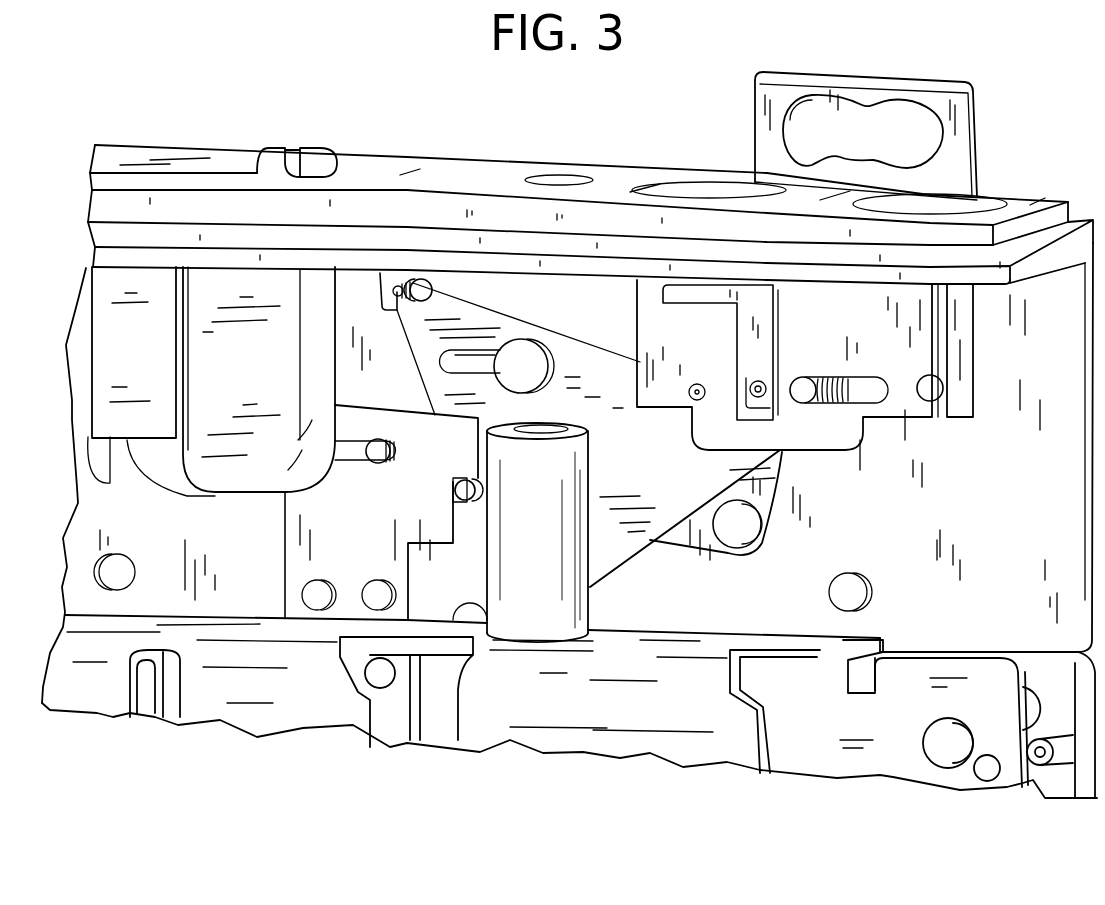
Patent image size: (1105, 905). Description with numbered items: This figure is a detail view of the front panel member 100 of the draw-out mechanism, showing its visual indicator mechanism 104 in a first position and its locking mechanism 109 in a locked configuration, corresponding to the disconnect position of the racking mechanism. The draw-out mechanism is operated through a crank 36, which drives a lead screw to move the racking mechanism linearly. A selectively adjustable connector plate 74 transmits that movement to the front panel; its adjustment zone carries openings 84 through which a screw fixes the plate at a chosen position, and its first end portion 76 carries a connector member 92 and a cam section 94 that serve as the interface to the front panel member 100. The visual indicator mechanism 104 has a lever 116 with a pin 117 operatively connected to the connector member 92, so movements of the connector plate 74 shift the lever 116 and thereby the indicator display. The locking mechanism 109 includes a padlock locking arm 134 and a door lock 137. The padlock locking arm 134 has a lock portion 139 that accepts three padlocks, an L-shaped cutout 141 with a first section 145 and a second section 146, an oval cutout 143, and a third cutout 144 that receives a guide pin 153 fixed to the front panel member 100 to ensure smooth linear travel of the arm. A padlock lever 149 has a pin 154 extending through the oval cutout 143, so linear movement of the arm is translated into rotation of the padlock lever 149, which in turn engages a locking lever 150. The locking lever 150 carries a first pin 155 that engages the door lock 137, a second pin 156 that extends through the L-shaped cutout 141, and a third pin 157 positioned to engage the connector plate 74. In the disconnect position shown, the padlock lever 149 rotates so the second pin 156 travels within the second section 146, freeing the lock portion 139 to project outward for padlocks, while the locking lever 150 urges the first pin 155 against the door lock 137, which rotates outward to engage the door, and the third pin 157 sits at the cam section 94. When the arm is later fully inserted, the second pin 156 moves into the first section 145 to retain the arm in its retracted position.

The front panel member 100 is at (176, 110).
The door lock 137 is at (383, 298).
The first pin 155 is at (413, 277).
The first section 145 is at (745, 271).
The lock portion 139 is at (884, 106).
The padlock locking arm 134 is at (903, 120).
The third cutout 144 is at (933, 317).
The second section 146 is at (767, 336).
The second pin 156 is at (762, 383).
The L-shaped cutout 141 is at (754, 286).
The oval cutout 143 is at (868, 382).
The guide pin 153 is at (942, 397).
The pin 117 is at (338, 432).
The first end portion 76 is at (440, 413).
The cam section 94 is at (477, 478).
The connector member 92 is at (352, 453).
The third pin 157 is at (452, 490).
The lever 116 is at (150, 477).
The connector plate 74 is at (308, 510).
The openings 84 is at (318, 581).
The visual indicator mechanism 104 is at (195, 518).
The crank 36 is at (560, 600).
The locking lever 150 is at (623, 530).
The padlock lever 149 is at (760, 506).
The pin 154 is at (803, 393).
The locking mechanism 109 is at (879, 492).